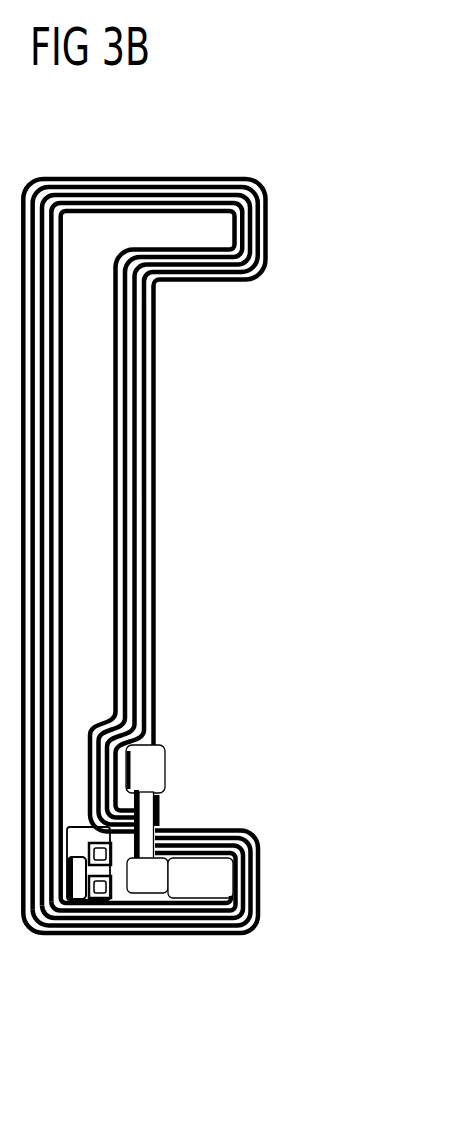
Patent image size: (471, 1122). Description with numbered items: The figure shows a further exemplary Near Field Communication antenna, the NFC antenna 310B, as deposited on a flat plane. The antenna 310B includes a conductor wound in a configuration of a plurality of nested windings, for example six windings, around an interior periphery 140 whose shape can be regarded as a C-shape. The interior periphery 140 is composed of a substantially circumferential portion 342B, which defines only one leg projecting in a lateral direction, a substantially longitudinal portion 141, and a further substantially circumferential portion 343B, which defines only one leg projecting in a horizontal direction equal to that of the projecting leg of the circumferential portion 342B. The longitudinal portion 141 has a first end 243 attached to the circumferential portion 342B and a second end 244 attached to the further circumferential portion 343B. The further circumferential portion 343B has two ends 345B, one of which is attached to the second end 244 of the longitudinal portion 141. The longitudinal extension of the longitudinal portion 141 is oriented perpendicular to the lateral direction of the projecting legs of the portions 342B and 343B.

The ends of the further substantially circumferential portion 345B is at (82, 227).
The further substantially circumferential portion 343B is at (160, 227).
The second end 244 is at (100, 287).
The interior periphery 140 is at (88, 555).
The longitudinal portion 141 is at (95, 668).
The NFC antenna 310B is at (240, 386).
The first end 243 is at (78, 817).
The circumferential portion 342B is at (202, 885).